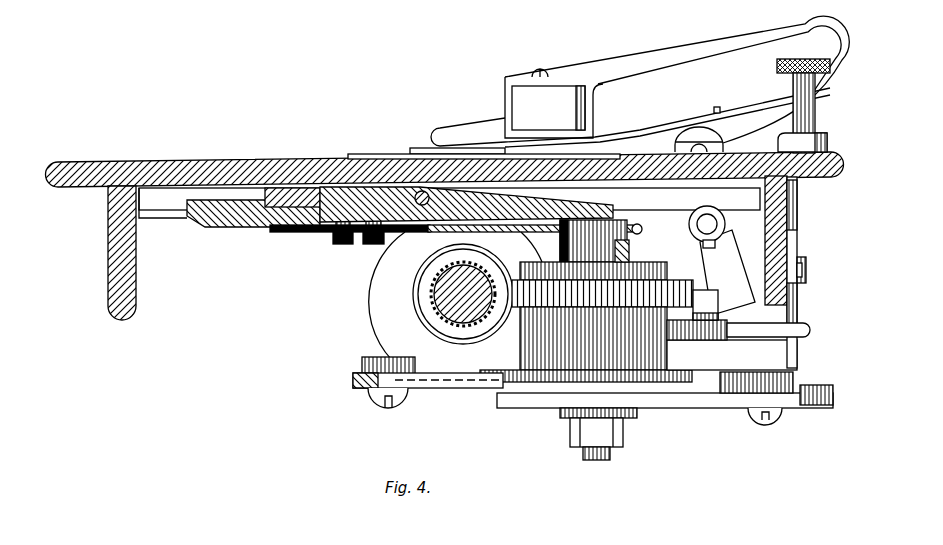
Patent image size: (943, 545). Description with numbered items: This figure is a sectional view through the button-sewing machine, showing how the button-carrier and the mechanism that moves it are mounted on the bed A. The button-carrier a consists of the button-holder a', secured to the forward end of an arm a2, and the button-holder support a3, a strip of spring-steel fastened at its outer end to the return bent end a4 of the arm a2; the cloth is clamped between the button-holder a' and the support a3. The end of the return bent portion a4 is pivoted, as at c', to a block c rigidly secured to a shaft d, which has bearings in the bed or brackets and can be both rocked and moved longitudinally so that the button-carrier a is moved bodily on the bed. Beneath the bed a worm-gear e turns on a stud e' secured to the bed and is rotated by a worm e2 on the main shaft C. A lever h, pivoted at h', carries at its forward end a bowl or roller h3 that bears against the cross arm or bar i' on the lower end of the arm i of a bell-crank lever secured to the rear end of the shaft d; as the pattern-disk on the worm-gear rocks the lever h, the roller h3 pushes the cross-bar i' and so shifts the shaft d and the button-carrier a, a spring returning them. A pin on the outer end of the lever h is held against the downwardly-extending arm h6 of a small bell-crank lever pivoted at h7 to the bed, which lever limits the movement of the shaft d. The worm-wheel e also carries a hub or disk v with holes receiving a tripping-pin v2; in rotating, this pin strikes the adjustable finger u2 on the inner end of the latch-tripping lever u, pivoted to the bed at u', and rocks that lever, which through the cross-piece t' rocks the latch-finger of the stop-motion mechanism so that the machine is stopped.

The bed A is at (210, 158).
The cross-piece t' is at (449, 170).
The latch-tripping lever u is at (229, 222).
The pivot of latch-tripping lever u' is at (466, 202).
The adjustable finger u2 is at (641, 229).
The worm-gear e is at (455, 302).
The worm e2 is at (463, 287).
The hub or disk v is at (655, 266).
The tripping-pin v2 is at (630, 252).
The lever h is at (593, 381).
The stud e' is at (599, 437).
The main shaft C is at (466, 318).
The downwardly-extending arm h6 is at (800, 324).
The pivot of bell-crank lever h7 is at (808, 270).
The arm of bell-crank lever i is at (727, 272).
The shaft d is at (700, 228).
The cross arm or bar i' is at (705, 305).
The bowl or roller h3 is at (730, 320).
The arm a2 is at (690, 53).
The return bent end a4 is at (767, 115).
The button-carrier a is at (468, 127).
The button-holder a' is at (457, 140).
The button-holder support a3 is at (484, 148).
The block c is at (707, 139).
The pivot c' is at (662, 140).
The pivot of lever h h' is at (810, 106).